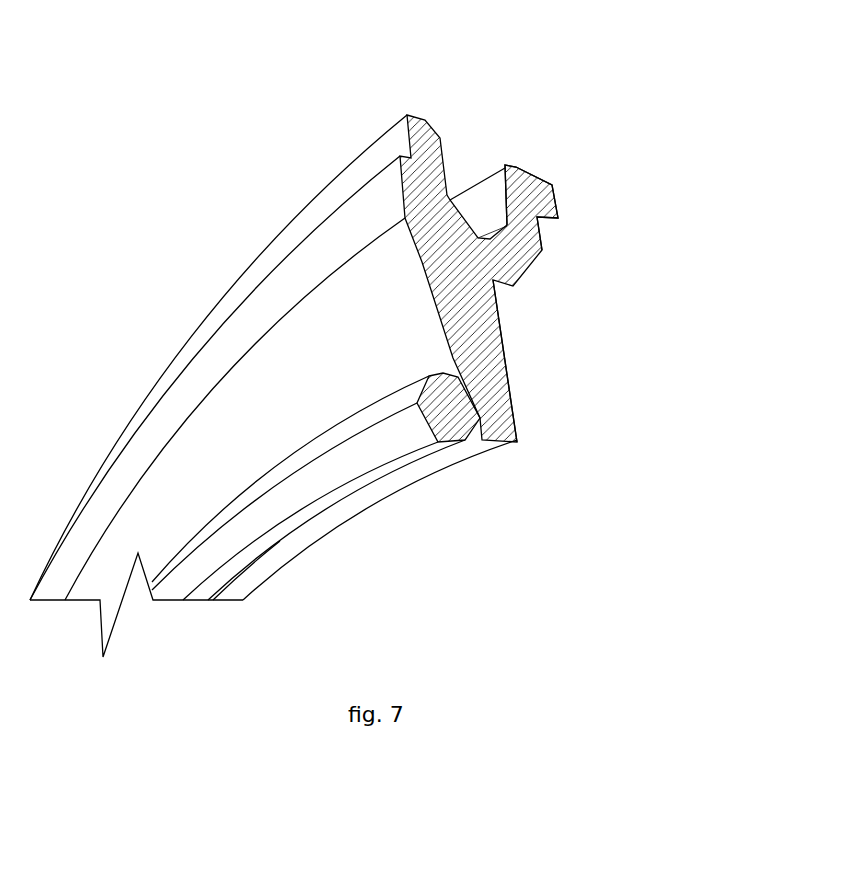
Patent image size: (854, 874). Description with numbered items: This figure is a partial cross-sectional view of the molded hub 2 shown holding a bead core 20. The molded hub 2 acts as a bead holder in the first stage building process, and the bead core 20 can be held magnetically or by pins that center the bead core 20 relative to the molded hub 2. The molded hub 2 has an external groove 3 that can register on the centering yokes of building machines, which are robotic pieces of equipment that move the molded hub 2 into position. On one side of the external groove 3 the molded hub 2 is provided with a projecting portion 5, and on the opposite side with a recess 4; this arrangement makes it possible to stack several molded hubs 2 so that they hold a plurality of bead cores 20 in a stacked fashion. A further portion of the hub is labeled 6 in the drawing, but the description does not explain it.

The molded hub 2 is at (473, 312).
The external groove 3 is at (477, 183).
The recess 4 is at (367, 147).
The projecting portion 5 is at (532, 198).
The wall 6 is at (480, 385).
The bead core 20 is at (455, 412).